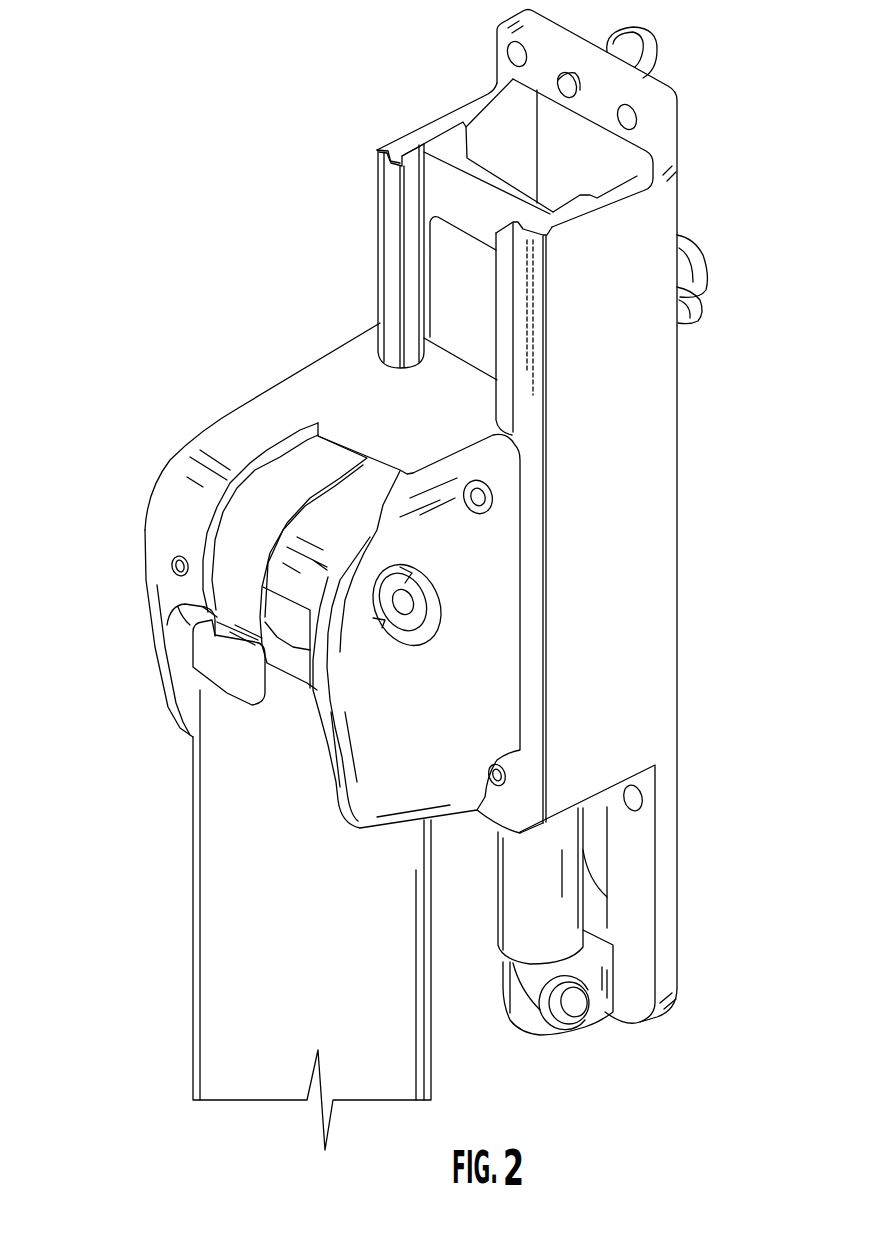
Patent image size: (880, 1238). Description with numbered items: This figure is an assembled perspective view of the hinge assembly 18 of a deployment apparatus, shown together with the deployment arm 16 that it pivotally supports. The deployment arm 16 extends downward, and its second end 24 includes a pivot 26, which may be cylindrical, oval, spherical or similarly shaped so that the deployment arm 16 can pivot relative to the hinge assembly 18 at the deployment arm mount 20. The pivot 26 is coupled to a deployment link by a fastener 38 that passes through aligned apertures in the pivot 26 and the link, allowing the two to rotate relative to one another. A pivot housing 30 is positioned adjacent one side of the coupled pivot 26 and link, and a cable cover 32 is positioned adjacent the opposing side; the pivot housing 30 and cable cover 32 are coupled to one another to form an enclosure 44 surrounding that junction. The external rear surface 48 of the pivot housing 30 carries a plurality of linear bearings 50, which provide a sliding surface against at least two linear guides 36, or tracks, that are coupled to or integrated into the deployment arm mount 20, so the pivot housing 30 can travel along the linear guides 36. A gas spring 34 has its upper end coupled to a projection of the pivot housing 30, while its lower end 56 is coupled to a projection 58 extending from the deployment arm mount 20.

The deployment arm 16 is at (193, 963).
The hinge assembly 18 is at (128, 196).
The deployment arm mount 20 is at (665, 202).
The second end 24 is at (205, 660).
The pivot 26 is at (218, 590).
The pivot housing 30 is at (170, 500).
The cable cover 32 is at (487, 689).
The gas spring 34 is at (560, 923).
The linear guides 36 is at (387, 150).
The fastener 38 is at (421, 593).
The enclosure 44 is at (347, 387).
The external rear surface 48 is at (447, 350).
The linear bearings 50 is at (380, 327).
The lower end 56 is at (573, 1010).
The projection 58 is at (607, 980).